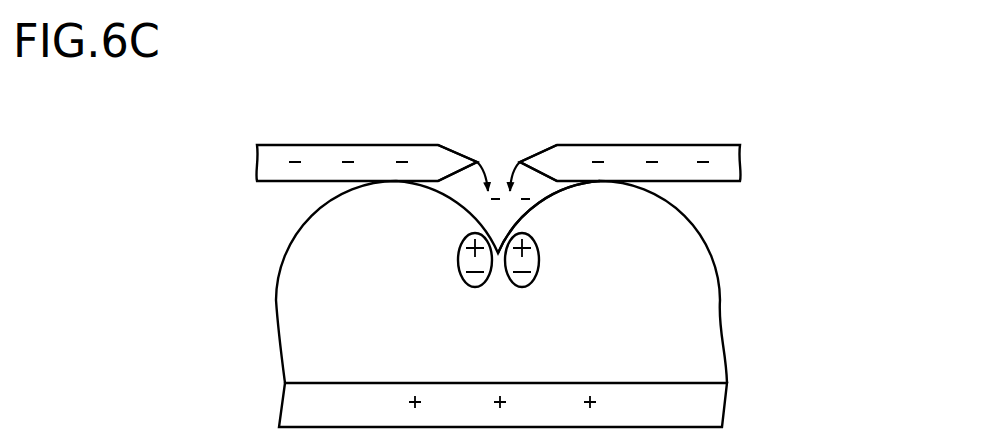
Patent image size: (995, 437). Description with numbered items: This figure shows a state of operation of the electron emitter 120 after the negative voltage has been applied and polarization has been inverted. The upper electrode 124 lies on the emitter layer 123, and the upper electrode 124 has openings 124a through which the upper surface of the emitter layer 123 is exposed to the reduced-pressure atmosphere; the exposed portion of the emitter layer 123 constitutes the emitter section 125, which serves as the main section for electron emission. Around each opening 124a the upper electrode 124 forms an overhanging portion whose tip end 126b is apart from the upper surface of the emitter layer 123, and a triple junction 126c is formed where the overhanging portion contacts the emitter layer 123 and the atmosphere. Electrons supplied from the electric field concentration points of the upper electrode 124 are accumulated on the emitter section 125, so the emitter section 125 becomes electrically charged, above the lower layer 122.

The electron emitter 120 is at (810, 79).
The lower electrode 122 is at (290, 400).
The emitter layer 123 is at (283, 287).
The upper electrode 124 is at (412, 152).
The openings 124a is at (530, 105).
The emitter section 125 is at (543, 199).
The tip end of overhanging portion 126b is at (478, 161).
The triple junction 126c is at (608, 180).